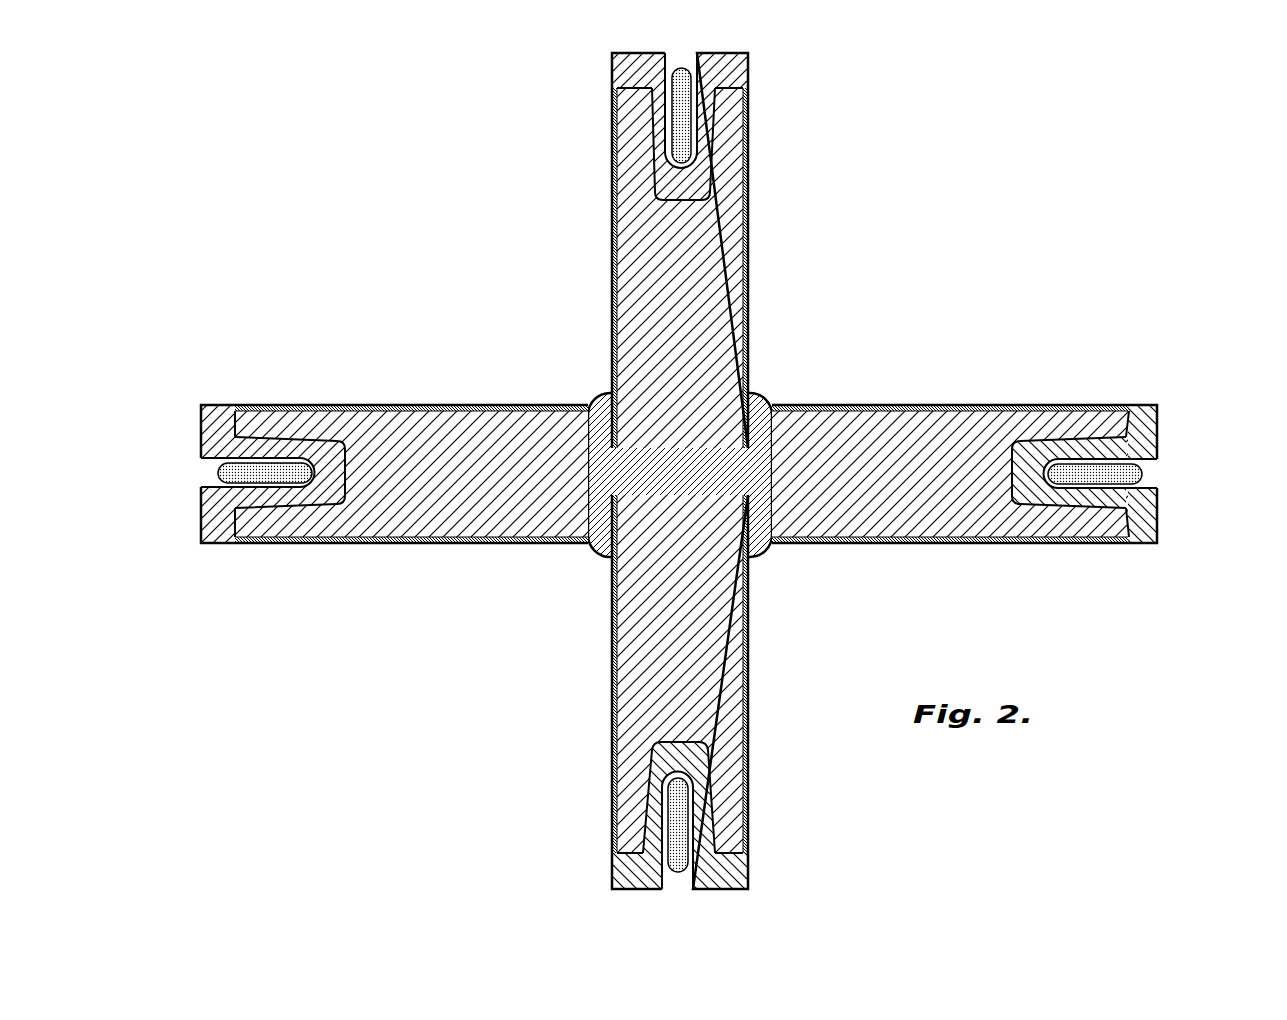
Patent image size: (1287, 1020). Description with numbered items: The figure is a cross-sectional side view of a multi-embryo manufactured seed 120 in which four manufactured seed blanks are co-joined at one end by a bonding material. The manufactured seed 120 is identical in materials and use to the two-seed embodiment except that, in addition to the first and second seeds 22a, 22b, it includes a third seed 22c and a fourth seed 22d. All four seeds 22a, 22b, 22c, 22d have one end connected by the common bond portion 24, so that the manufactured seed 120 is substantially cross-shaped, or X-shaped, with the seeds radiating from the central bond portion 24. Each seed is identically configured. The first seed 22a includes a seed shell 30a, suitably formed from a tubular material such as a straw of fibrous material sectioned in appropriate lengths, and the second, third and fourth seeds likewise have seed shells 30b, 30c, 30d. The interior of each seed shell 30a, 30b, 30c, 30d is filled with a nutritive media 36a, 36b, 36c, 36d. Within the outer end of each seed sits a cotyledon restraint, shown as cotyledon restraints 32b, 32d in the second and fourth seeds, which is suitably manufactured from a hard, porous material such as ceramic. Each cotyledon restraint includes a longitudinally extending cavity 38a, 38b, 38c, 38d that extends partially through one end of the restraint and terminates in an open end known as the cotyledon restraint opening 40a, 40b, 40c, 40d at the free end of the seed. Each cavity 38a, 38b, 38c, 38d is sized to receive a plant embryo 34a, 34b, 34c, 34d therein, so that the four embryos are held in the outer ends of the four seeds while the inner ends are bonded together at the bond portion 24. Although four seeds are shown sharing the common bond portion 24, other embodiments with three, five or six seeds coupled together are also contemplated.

The manufactured seed 120 is at (910, 243).
The bond portion 24 is at (760, 395).
The first seed 22a is at (757, 177).
The second seed 22b is at (604, 666).
The third seed 22c is at (385, 397).
The fourth seed 22d is at (960, 552).
The seed shell 30a is at (748, 240).
The seed shell 30b is at (748, 640).
The seed shell 30c is at (372, 543).
The seed shell 30d is at (982, 406).
The cotyledon restraint 32b is at (715, 787).
The cotyledon restraint 32d is at (1052, 545).
The embryo 34a is at (686, 110).
The embryo 34b is at (676, 826).
The embryo 34c is at (268, 484).
The embryo 34d is at (1088, 452).
The nutritive media 36a is at (632, 215).
The nutritive media 36b is at (630, 605).
The nutritive media 36c is at (512, 520).
The nutritive media 36d is at (895, 440).
The cavity 38a is at (663, 54).
The cavity 38b is at (625, 878).
The cavity 38c is at (218, 541).
The cavity 38d is at (1128, 410).
The cotyledon restraint opening 40a is at (700, 54).
The cotyledon restraint opening 40b is at (689, 889).
The cotyledon restraint opening 40c is at (201, 458).
The cotyledon restraint opening 40d is at (1158, 483).